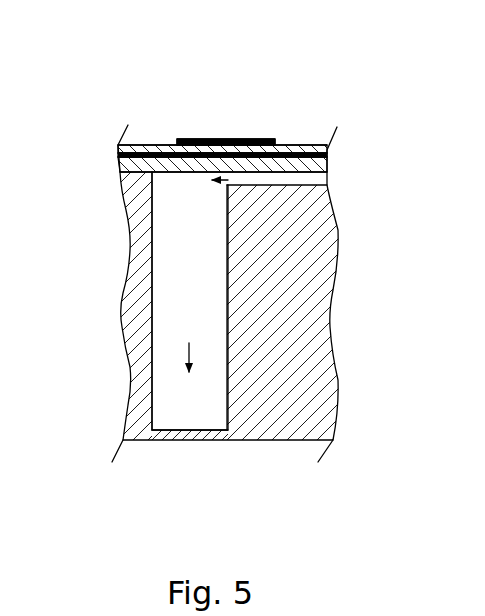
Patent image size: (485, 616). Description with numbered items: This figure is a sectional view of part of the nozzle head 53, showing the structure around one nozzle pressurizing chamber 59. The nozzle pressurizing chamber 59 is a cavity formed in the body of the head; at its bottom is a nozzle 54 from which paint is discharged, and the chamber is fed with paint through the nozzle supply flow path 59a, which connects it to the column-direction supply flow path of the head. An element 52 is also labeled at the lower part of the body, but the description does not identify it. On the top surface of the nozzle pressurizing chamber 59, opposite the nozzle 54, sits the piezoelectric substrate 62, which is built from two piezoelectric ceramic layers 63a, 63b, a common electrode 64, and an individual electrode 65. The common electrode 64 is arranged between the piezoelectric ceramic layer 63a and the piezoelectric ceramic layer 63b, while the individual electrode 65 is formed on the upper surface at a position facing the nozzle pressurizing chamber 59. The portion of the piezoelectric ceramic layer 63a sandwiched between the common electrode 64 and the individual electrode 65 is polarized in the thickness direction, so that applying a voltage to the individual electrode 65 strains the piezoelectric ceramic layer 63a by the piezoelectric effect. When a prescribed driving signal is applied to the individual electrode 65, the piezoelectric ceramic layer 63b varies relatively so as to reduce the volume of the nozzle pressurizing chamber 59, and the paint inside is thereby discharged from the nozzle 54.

The base body 52 is at (242, 332).
The nozzle head 53 is at (263, 118).
The nozzle 54 is at (188, 443).
The nozzle pressurizing chamber 59 is at (163, 264).
The nozzle supply flow path 59a is at (295, 185).
The piezoelectric substrate 62 is at (247, 115).
The piezoelectric ceramic layer 63a is at (330, 170).
The piezoelectric ceramic layer 63b is at (330, 153).
The common electrode 64 is at (303, 150).
The individual electrode 65 is at (218, 138).